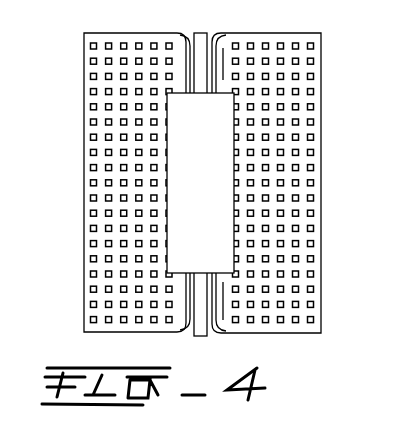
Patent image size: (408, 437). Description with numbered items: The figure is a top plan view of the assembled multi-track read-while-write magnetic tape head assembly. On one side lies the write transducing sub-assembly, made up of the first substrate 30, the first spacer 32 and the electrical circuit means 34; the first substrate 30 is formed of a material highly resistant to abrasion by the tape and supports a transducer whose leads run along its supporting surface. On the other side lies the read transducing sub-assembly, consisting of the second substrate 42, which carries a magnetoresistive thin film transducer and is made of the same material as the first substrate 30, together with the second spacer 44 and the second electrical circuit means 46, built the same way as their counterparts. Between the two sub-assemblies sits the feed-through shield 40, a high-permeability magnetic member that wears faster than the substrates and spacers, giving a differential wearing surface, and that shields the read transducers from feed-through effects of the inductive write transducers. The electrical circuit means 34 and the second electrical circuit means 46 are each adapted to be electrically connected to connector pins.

The first substrate 30 is at (116, 182).
The first spacer 32 is at (185, 196).
The electrical circuit means 34 is at (103, 99).
The feed-through shield 40 is at (200, 163).
The second substrate 42 is at (227, 253).
The second spacer 44 is at (208, 220).
The second electrical circuit means 46 is at (286, 183).